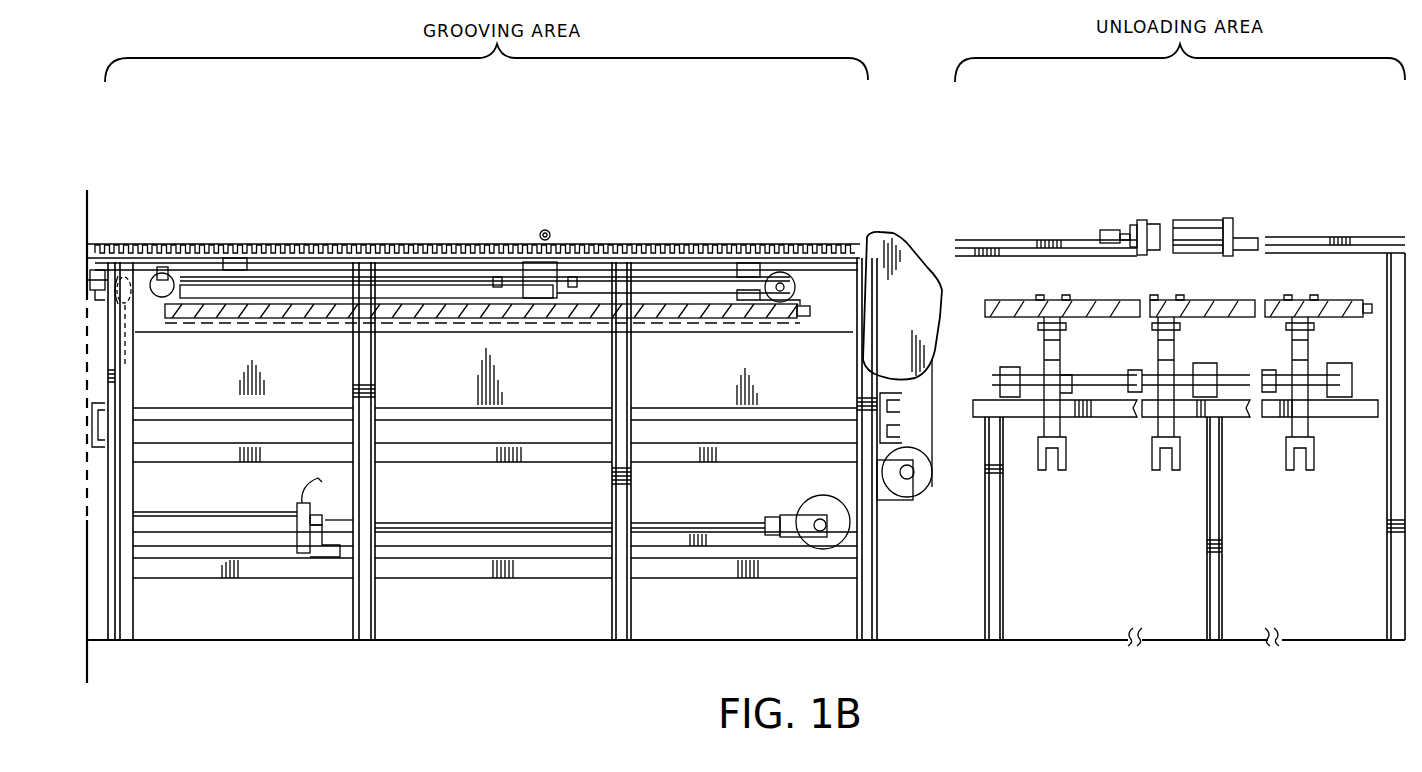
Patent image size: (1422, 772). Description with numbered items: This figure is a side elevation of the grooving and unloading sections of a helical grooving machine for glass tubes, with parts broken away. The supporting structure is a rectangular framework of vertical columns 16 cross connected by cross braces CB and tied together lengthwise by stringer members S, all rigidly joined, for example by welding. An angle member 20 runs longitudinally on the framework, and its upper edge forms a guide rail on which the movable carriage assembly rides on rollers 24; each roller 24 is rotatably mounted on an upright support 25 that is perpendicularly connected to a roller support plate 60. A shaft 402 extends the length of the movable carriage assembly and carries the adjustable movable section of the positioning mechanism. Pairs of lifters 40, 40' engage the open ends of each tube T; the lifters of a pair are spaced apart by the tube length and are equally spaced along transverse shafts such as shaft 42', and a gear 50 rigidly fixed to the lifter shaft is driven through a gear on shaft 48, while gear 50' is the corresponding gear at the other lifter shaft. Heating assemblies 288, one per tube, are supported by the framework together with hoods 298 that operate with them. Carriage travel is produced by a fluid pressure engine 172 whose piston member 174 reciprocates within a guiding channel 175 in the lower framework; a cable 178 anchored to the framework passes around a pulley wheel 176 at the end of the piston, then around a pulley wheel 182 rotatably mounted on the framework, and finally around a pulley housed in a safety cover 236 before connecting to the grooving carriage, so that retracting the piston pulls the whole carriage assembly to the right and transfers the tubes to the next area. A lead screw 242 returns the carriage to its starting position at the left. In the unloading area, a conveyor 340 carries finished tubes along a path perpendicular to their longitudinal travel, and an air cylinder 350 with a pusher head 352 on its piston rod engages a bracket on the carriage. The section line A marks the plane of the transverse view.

The vertical columns 16 is at (133, 392).
The angle member 20 is at (1003, 242).
The rollers 24 is at (548, 230).
The upright support 25 is at (378, 305).
The lifters 40 is at (138, 321).
The lifters 40' is at (803, 287).
The shaft 42' is at (773, 316).
The shaft 48 is at (183, 270).
The gear 50 is at (137, 326).
The roller bracket 50' is at (793, 325).
The roller support plate 60 is at (96, 270).
The fluid pressure engine 172 is at (198, 512).
The piston member 174 is at (522, 528).
The channel 175 is at (690, 548).
The pulley wheel 176 is at (810, 510).
The cable 178 is at (934, 371).
The pulley wheel 182 is at (915, 496).
The safety cover 236 is at (882, 312).
The lead screw 242 is at (718, 246).
The heating assemblies 288 is at (282, 400).
The hoods 298 is at (673, 320).
The conveyor 340 is at (1003, 520).
The air cylinder 350 is at (1205, 228).
The pusher head 352 is at (1108, 230).
The shaft 402 is at (390, 266).
The section line A is at (87, 439).
The cross braces CB is at (105, 426).
The stringer members S is at (478, 448).
The tube T is at (428, 314).